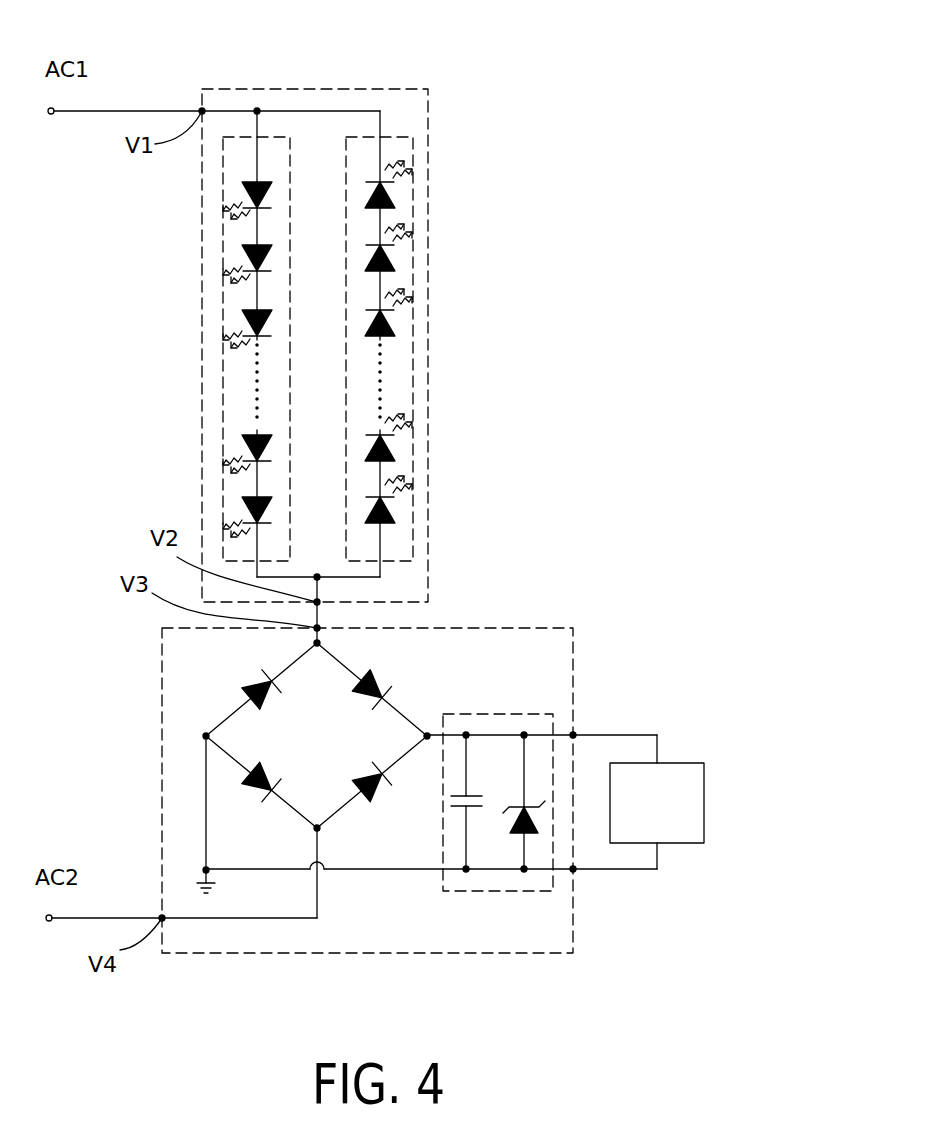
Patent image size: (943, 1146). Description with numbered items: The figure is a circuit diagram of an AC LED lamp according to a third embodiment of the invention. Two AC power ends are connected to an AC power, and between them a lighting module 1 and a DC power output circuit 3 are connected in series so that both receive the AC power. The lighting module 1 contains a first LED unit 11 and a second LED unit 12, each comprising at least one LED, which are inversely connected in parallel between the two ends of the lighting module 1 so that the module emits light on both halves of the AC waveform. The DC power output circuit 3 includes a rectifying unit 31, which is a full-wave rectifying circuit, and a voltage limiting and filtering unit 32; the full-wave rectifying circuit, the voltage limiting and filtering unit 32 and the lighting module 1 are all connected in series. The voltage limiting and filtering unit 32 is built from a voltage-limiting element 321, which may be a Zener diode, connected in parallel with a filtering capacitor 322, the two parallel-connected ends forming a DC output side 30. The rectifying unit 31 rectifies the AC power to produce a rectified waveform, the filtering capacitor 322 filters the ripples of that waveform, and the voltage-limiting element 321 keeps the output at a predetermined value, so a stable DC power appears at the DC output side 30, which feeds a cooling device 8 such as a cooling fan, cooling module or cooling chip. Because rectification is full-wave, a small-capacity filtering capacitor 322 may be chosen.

The lighting module 1 is at (428, 355).
The first LED unit 11 is at (270, 137).
The second LED unit 12 is at (370, 133).
The DC power output circuit 3 is at (481, 627).
The rectifying unit 31 is at (215, 703).
The voltage limiting and filtering unit 32 is at (462, 864).
The voltage-limiting element 321 is at (531, 834).
The filtering capacitor 322 is at (481, 808).
The DC output side 30 is at (574, 733).
The cooling device 8 is at (678, 772).